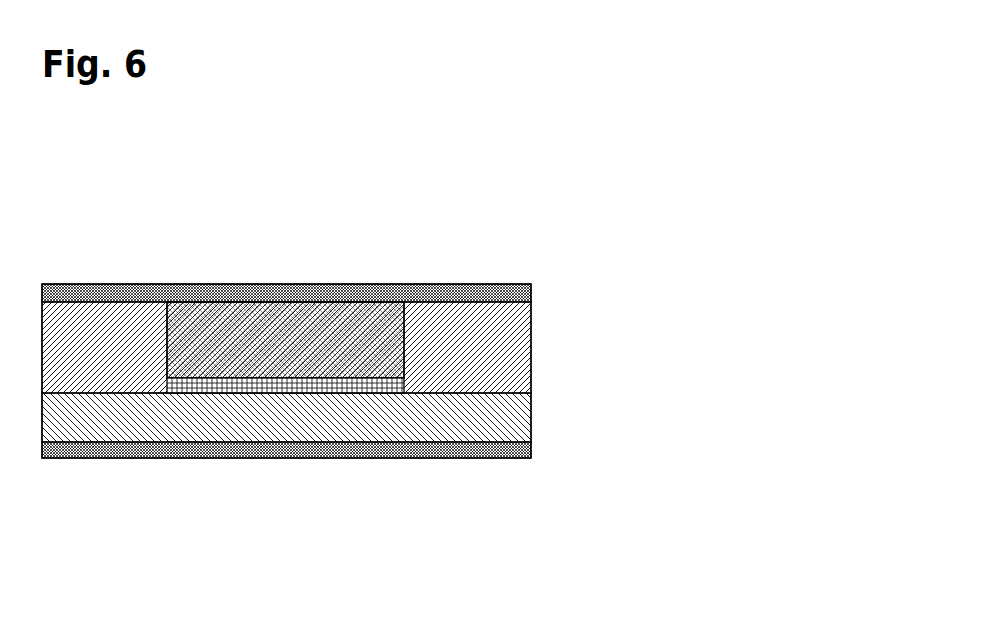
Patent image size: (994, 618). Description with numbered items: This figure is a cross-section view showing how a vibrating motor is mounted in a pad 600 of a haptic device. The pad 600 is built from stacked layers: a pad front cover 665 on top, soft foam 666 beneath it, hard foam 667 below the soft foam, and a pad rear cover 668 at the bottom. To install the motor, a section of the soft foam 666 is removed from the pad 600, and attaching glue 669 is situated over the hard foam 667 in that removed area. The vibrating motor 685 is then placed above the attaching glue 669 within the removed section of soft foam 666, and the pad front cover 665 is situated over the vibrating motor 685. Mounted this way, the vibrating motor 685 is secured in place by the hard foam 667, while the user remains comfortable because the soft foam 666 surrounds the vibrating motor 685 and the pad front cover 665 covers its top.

The pad 600 is at (793, 118).
The pad front cover 665 is at (459, 283).
The soft foam 666 is at (500, 347).
The hard foam 667 is at (501, 418).
The pad rear cover 668 is at (420, 458).
The attaching glue 669 is at (293, 394).
The vibrating motor 685 is at (294, 329).